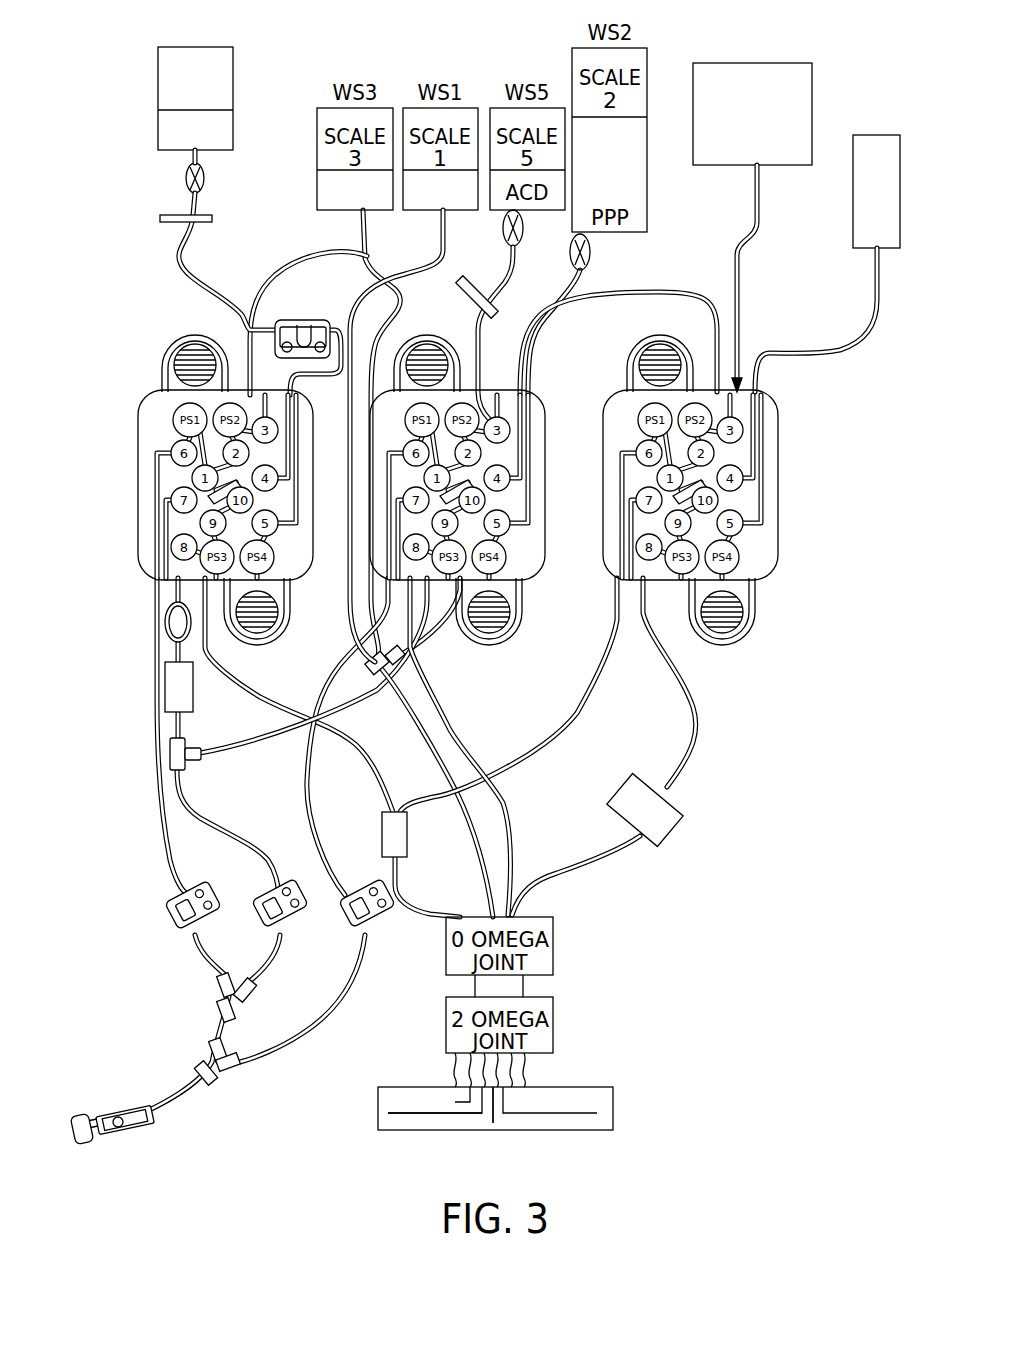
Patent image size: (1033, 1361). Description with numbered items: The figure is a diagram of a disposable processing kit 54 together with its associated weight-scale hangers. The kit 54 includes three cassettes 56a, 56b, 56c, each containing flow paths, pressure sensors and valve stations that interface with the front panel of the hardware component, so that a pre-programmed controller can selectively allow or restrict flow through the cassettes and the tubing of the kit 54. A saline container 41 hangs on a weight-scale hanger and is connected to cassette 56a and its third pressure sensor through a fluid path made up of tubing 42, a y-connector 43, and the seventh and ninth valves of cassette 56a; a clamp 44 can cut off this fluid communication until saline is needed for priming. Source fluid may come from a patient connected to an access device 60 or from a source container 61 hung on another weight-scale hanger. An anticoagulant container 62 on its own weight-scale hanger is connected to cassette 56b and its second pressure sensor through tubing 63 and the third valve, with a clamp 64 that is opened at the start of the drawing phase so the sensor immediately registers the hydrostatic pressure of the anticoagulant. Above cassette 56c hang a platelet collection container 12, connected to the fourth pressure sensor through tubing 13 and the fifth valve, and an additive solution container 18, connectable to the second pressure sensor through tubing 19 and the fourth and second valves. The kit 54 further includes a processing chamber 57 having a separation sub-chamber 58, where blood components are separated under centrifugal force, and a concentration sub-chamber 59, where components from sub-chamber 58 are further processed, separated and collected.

The saline container 41 is at (158, 132).
The clamp 44 is at (206, 176).
The tubing 42 is at (203, 275).
The source container 61 is at (424, 226).
The anticoagulant container 62 is at (524, 232).
The clamp 64 is at (507, 242).
The tubing 63 is at (476, 328).
The additive solution container 18 is at (755, 63).
The platelet collection container 12 is at (880, 145).
The tubing 19 is at (745, 238).
The tubing 13 is at (862, 350).
The cassette 56a is at (152, 408).
The cassette 56b is at (530, 548).
The cassette 56c is at (765, 565).
The disposable processing kit 54 is at (115, 665).
The y-connector 43 is at (185, 770).
The access device 60 is at (88, 1112).
The sub-chamber 59 is at (597, 1095).
The sub-chamber 58 is at (410, 1113).
The processing chamber 57 is at (570, 1148).